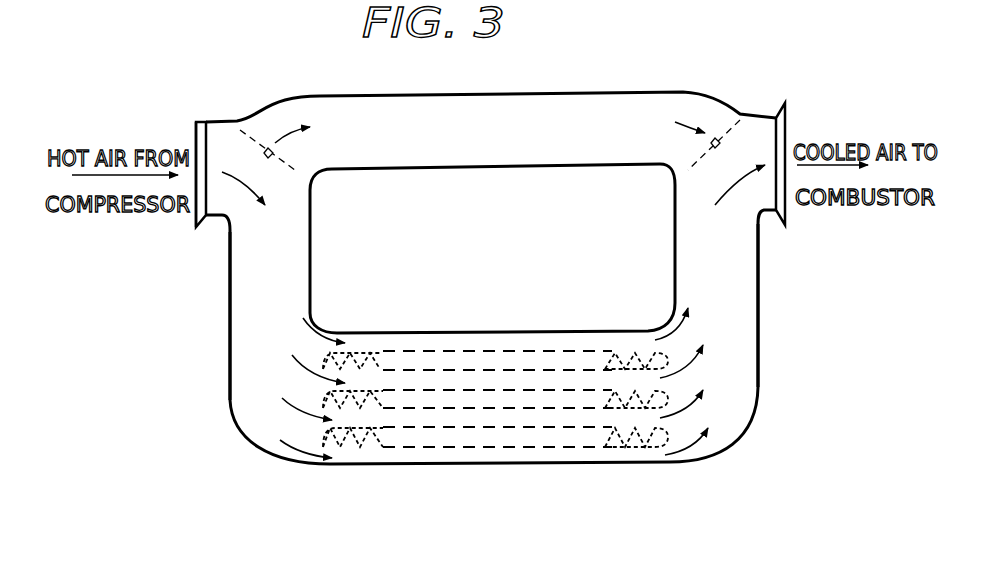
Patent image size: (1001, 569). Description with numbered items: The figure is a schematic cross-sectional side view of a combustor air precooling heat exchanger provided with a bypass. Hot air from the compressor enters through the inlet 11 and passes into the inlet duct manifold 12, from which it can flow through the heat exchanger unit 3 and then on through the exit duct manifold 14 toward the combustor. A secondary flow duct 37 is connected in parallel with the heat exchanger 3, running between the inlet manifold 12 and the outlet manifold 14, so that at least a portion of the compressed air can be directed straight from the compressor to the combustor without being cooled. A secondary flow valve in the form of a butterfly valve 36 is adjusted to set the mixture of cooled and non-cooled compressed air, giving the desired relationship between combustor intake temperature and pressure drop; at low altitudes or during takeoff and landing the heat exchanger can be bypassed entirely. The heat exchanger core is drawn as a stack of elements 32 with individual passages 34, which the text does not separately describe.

The heat exchanger unit 3 is at (421, 330).
The cooling air inlet 11 is at (197, 122).
The inlet duct manifold 12 is at (233, 336).
The exit duct manifold 14 is at (760, 330).
The heat exchanger 32 is at (655, 473).
The heat exchanger tube 34 is at (574, 355).
The butterfly valve 36 is at (254, 132).
The secondary flow duct 37 is at (648, 125).